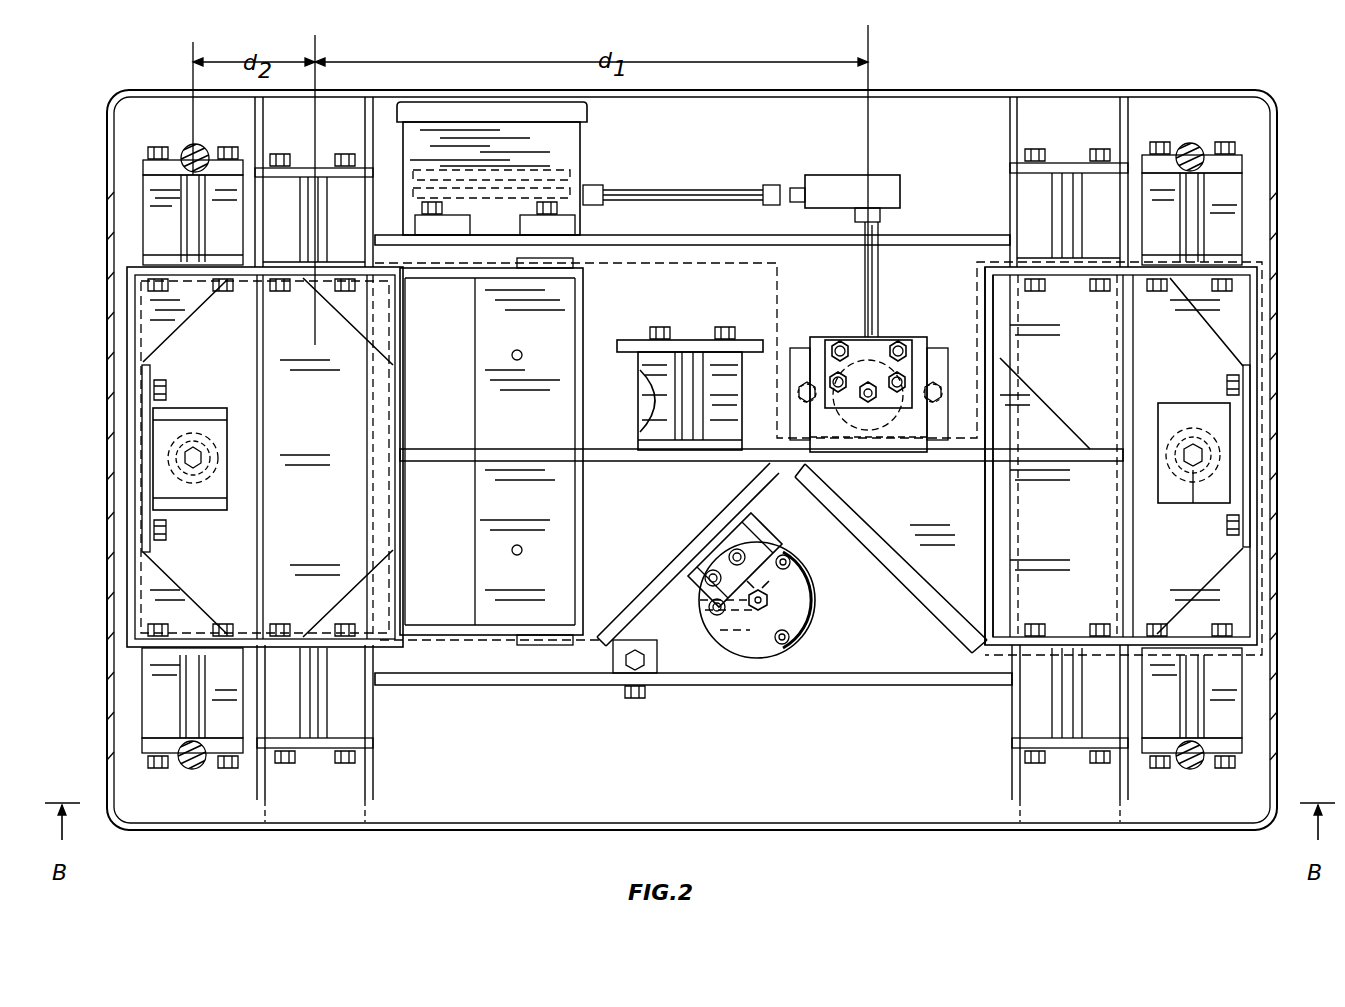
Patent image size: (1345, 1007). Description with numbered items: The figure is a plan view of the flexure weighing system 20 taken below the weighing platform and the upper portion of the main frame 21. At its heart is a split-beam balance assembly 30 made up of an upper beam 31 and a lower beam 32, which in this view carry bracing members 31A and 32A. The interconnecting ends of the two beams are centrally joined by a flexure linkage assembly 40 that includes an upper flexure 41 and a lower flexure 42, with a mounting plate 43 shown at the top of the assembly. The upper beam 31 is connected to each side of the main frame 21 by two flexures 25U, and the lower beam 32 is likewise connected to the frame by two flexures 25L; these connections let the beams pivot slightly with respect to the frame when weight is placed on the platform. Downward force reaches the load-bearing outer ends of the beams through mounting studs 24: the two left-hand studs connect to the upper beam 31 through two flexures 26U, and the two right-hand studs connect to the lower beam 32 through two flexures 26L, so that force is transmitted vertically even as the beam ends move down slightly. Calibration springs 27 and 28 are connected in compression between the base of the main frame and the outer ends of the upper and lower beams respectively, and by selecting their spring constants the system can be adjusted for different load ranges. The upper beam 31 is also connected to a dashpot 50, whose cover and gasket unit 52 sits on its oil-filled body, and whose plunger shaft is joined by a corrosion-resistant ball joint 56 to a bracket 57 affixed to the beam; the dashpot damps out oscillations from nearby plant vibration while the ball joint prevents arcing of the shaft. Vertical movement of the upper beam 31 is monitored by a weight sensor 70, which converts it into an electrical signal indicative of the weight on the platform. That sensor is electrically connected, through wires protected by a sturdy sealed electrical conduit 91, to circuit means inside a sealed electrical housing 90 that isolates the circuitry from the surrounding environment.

The flexure weighing system 20 is at (1014, 70).
The main frame 21 is at (1277, 235).
The mounting studs 24 is at (190, 148).
The flexures 25U is at (368, 268).
The flexures 25L is at (1020, 209).
The flexures 26U is at (140, 215).
The flexures 26L is at (1245, 200).
The calibration spring 27 is at (152, 450).
The calibration spring 28 is at (1235, 458).
The split-beam balance assembly 30 is at (1268, 362).
The upper beam 31 is at (487, 648).
The bracing member 31A is at (660, 580).
The lower beam 32 is at (980, 302).
The bracing member 32A is at (880, 528).
The flexure linkage assembly 40 is at (679, 360).
The upper flexure 41 is at (640, 366).
The lower flexure 42 is at (660, 402).
The mounting plate 43 is at (632, 340).
The dashpot 50 is at (782, 611).
The cover and gasket unit 52 is at (808, 612).
The ball joint 56 is at (757, 606).
The bracket 57 is at (745, 545).
The weight sensor 70 is at (826, 322).
The electrical housing 90 is at (583, 148).
The electrical conduit 91 is at (680, 192).